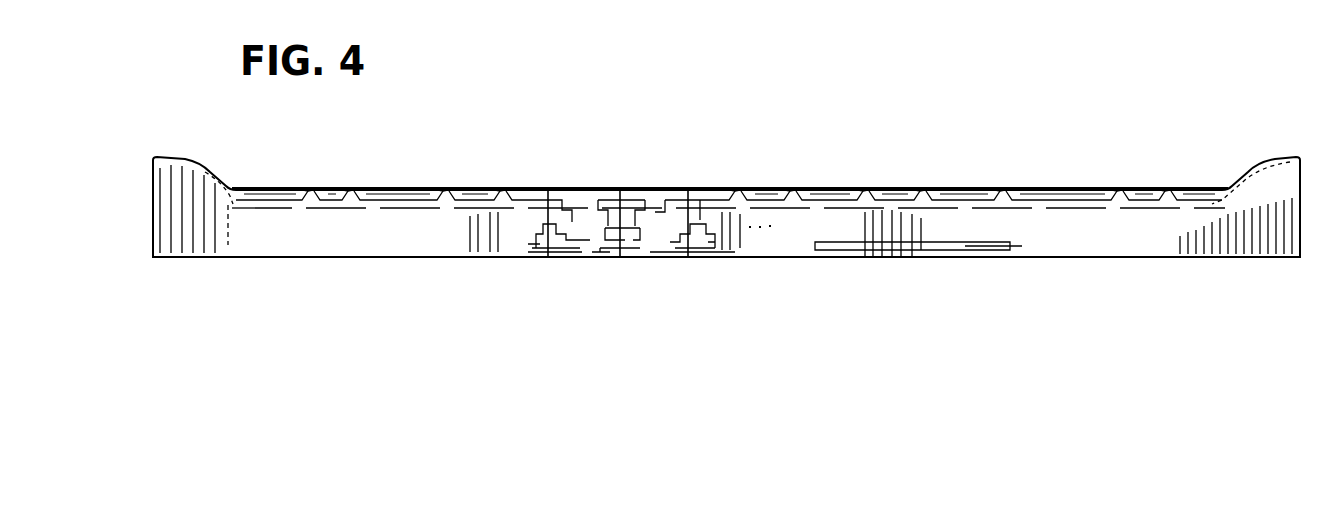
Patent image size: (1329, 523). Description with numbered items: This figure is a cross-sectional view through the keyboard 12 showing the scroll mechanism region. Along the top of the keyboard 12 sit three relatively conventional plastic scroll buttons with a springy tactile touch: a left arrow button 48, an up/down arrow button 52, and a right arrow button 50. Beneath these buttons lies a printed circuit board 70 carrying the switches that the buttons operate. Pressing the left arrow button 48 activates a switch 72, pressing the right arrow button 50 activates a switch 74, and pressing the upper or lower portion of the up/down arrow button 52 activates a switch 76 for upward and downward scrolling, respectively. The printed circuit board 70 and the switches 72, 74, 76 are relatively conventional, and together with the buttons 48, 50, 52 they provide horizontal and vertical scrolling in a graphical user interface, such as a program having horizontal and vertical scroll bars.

The tray body 12 is at (211, 258).
The left arrow button 48 is at (548, 188).
The up/down arrow button 52 is at (622, 188).
The right arrow button 50 is at (688, 188).
The switch 72 is at (545, 258).
The printed circuit board 70 is at (595, 258).
The switch 76 is at (618, 258).
The switch 74 is at (695, 258).